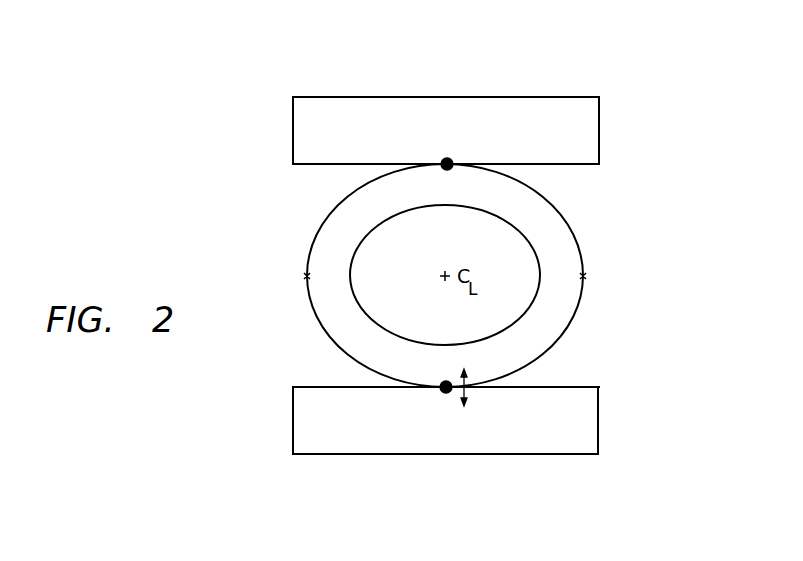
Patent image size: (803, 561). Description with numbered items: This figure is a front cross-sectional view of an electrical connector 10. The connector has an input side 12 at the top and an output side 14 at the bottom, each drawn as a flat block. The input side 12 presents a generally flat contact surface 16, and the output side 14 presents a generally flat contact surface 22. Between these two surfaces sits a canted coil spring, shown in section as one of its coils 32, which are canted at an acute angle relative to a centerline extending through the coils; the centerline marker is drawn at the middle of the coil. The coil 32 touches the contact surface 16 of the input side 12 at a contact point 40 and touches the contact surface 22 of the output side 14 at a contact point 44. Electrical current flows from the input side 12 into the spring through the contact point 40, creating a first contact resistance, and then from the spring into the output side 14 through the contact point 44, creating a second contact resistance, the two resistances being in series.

The electrical connector 10 is at (658, 224).
The input side 12 is at (578, 131).
The output side 14 is at (578, 423).
The contact surface 16 is at (322, 165).
The contact surface 22 is at (318, 387).
The coils 32 is at (560, 309).
The contact point 40 is at (447, 158).
The contact point 44 is at (446, 392).